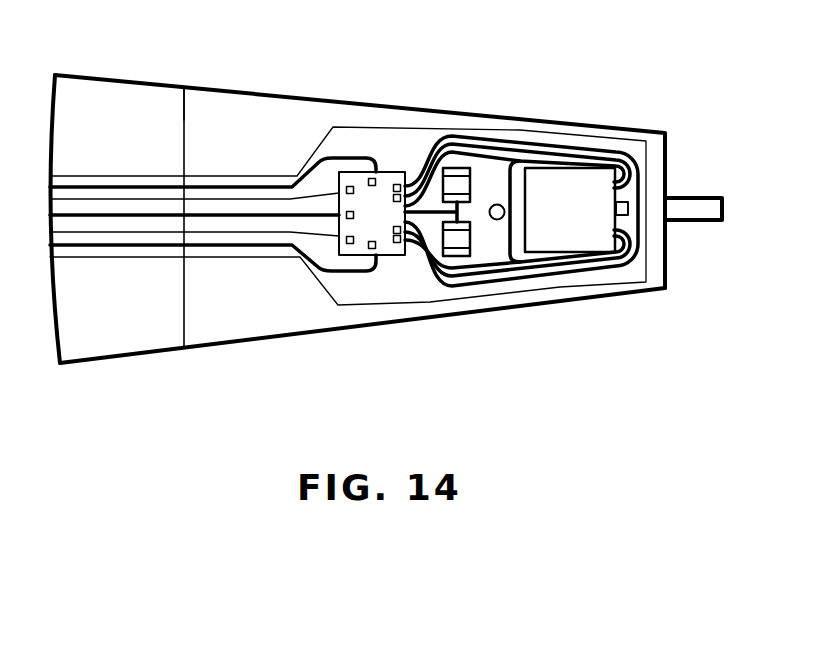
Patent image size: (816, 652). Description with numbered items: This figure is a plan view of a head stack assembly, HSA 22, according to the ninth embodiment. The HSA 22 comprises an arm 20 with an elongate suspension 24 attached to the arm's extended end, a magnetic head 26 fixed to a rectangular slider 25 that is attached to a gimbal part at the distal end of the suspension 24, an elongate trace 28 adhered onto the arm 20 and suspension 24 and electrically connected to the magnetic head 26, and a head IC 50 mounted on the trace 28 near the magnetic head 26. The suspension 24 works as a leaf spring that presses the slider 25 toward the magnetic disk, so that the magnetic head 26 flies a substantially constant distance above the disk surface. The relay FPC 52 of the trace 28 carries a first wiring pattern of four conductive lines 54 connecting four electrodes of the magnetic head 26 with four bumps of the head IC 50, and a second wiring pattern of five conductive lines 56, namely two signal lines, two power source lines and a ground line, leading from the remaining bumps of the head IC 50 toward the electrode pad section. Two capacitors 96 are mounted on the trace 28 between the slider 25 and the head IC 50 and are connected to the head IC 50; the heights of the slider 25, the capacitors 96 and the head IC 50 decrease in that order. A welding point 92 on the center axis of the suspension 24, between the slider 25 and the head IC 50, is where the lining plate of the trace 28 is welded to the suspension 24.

The arm 20 is at (137, 343).
The HSA 22 is at (192, 74).
The suspension 24 is at (249, 336).
The slider 25 is at (560, 237).
The magnetic head 26 is at (628, 210).
The trace 28 is at (217, 207).
The head IC 50 is at (378, 190).
The relay FPC 52 is at (402, 290).
The conductive lines 54 is at (588, 153).
The conductive lines 56 is at (130, 258).
The welding point 92 is at (495, 221).
The capacitors 96 is at (453, 168).